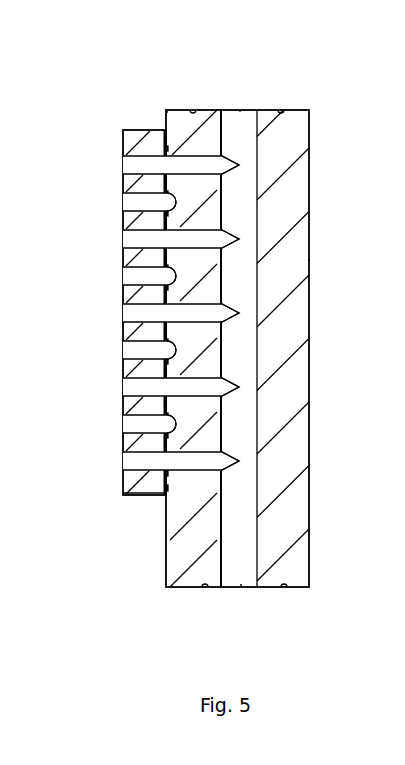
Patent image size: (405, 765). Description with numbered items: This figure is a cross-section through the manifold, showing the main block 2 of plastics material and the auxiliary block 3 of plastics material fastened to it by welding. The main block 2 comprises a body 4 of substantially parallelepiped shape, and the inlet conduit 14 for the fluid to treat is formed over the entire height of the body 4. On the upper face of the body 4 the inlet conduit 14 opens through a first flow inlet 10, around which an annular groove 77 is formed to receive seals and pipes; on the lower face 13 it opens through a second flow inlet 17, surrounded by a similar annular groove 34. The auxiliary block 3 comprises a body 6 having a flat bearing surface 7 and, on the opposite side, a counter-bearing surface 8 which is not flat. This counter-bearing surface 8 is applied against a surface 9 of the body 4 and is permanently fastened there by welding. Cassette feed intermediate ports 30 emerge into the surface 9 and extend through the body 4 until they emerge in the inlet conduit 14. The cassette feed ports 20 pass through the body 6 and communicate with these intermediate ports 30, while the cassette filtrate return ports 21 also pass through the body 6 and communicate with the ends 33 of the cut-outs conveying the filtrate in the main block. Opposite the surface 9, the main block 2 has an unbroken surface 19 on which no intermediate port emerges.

The main block 2 is at (309, 110).
The auxiliary block 3 is at (122, 491).
The body 4 is at (298, 143).
The body 6 is at (140, 496).
The flat bearing surface 7 is at (122, 140).
The counter-bearing surface 8 is at (170, 495).
The surface 9 is at (165, 112).
The first flow inlet 10 is at (223, 110).
The lower face 13 is at (203, 597).
The inlet conduit 14 is at (240, 103).
The second flow inlet 17 is at (243, 588).
The unbroken surface 19 is at (322, 257).
The cassette feed ports 20 is at (122, 167).
The cassette filtrate return ports 21 is at (122, 204).
The cassette feed intermediate ports 30 is at (172, 162).
The end of cut-out 33 is at (178, 205).
The annular groove 34 is at (284, 588).
The annular groove 77 is at (282, 108).